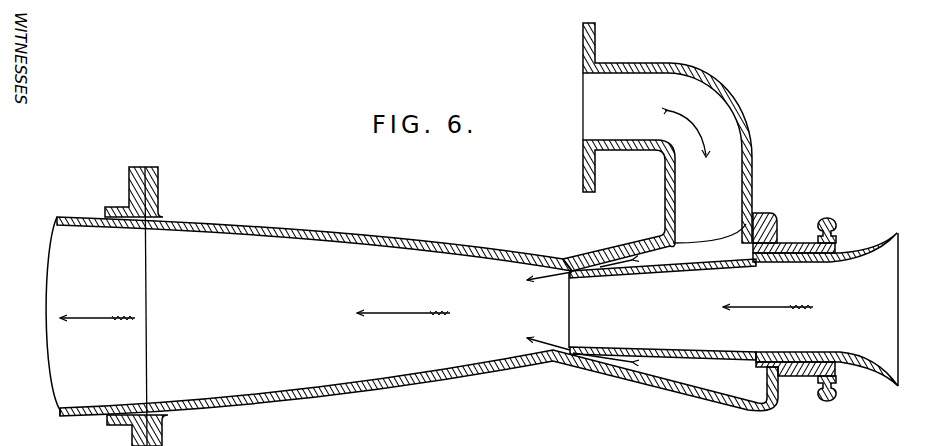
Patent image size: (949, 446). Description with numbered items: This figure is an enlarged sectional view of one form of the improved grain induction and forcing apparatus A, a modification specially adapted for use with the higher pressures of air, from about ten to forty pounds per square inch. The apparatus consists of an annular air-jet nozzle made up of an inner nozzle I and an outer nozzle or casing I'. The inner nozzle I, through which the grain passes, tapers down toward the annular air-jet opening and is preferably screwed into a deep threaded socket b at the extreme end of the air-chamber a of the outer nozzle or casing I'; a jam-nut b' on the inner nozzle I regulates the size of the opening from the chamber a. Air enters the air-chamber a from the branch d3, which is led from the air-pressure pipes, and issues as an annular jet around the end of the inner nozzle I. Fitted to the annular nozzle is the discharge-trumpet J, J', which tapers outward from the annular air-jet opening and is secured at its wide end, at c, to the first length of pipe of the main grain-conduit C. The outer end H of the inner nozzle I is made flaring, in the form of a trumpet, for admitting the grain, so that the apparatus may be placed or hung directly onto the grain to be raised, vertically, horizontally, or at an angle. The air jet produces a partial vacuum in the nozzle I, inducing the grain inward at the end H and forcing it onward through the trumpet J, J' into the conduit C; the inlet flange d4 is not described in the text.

The grain induction and forcing apparatus A is at (417, 306).
The main grain-conduit C is at (61, 325).
The joint of the trumpet to the conduit c is at (137, 430).
The discharge-trumpet J' is at (114, 314).
The outer nozzle or casing I' is at (601, 210).
The steam pipe inlet flange d4 is at (656, 133).
The air branch d3 is at (709, 224).
The inner nozzle I is at (662, 309).
The air-chamber a is at (632, 313).
The discharge-trumpet J is at (548, 337).
The outer end of the nozzle H is at (810, 309).
The threaded socket b is at (794, 294).
The jam-nut b' is at (823, 306).